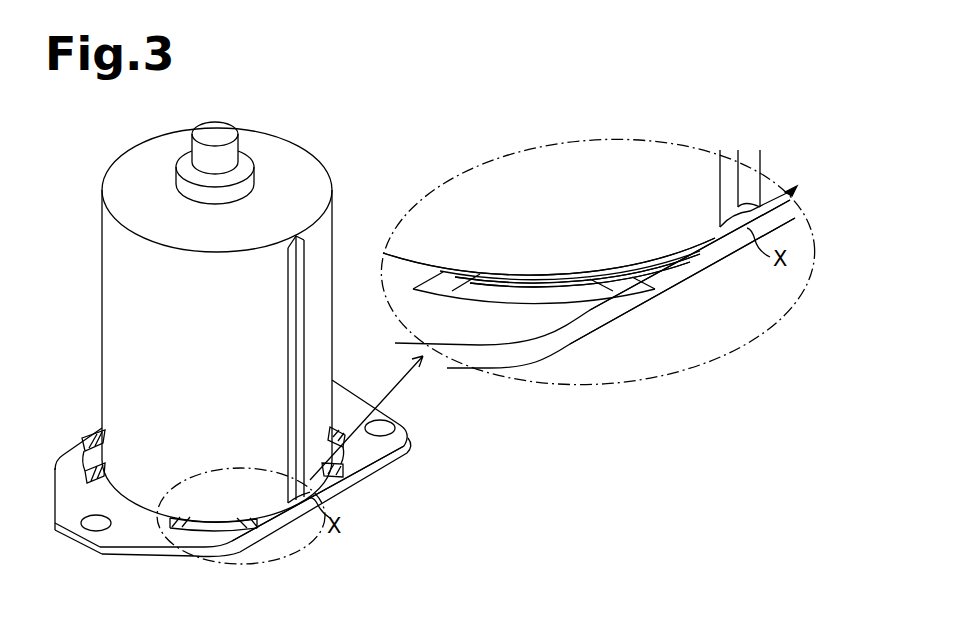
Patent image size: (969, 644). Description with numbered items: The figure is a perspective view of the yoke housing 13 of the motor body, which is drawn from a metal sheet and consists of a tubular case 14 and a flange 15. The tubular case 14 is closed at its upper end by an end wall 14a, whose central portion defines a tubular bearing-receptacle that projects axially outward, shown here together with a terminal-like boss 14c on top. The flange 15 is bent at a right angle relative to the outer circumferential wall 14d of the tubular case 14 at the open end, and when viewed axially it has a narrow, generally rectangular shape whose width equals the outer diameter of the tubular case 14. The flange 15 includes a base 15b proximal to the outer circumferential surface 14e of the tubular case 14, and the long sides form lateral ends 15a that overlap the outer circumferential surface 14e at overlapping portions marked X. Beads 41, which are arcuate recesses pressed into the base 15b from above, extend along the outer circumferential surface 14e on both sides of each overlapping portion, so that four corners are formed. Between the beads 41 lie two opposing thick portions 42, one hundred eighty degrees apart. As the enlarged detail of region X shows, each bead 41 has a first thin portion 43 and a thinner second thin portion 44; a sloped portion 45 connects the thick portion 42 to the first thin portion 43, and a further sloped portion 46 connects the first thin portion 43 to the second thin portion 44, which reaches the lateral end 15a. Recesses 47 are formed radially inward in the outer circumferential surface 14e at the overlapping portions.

The yoke housing 13 is at (326, 119).
The tubular case 14 is at (102, 272).
The end wall 14a is at (143, 153).
The terminal 14c is at (177, 153).
The outer circumferential wall 14d is at (372, 233).
The outer circumferential surface 14e is at (102, 330).
The flange 15 is at (56, 492).
The lateral end 15a is at (336, 480).
The base 15b is at (336, 418).
The bead 41 is at (73, 447).
The thick portion 42 is at (148, 518).
The first thin portion 43 is at (531, 283).
The second thin portion 44 is at (646, 275).
The sloped portion 45 is at (461, 277).
The further sloped portion 46 is at (611, 277).
The recess 47 is at (304, 338).